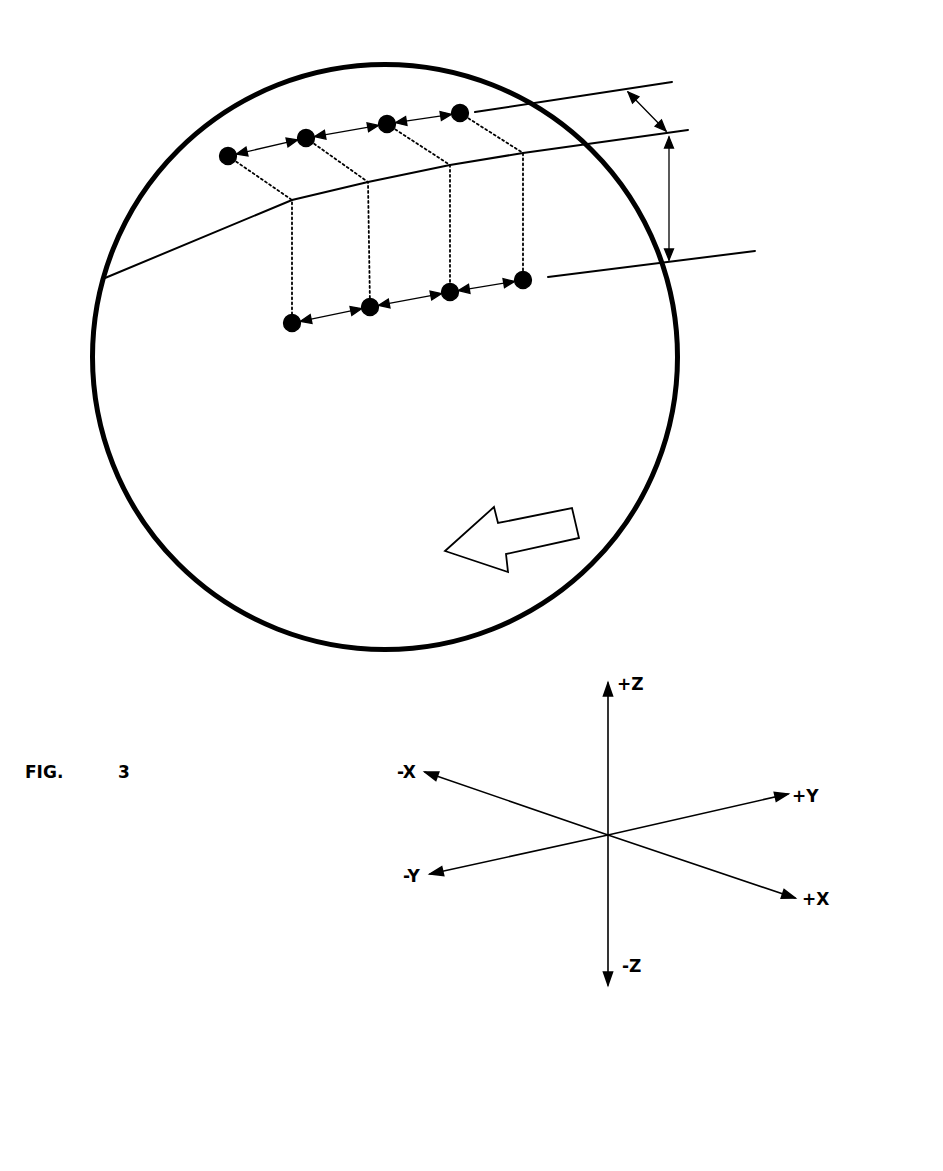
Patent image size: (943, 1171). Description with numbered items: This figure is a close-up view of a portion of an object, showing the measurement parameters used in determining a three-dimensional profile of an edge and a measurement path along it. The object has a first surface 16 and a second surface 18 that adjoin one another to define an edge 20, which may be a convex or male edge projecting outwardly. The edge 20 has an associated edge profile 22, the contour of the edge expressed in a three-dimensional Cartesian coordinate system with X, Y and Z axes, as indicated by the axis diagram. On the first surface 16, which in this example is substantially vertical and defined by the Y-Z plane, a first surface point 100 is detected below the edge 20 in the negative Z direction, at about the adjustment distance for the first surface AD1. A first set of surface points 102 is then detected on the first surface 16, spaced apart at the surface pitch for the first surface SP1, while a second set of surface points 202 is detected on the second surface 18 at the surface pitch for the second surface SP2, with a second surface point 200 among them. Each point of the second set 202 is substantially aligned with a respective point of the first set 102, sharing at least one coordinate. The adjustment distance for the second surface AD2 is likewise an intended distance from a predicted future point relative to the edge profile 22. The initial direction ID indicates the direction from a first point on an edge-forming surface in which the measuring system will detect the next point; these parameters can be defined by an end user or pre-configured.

The first surface 16 is at (185, 504).
The second surface 18 is at (158, 207).
The edge 20 is at (140, 260).
The edge profile 22 is at (166, 255).
The first surface point 100 is at (529, 289).
The first set of surface points 102 is at (296, 332).
The second surface point 200 is at (470, 110).
The second set of surface points 202 is at (225, 148).
The surface pitch for the first surface SP1 is at (338, 317).
The surface pitch for the second surface SP2 is at (263, 147).
The adjustment distance for the first surface AD1 is at (668, 210).
The adjustment distance for the second surface AD2 is at (650, 113).
The initial direction ID is at (548, 545).